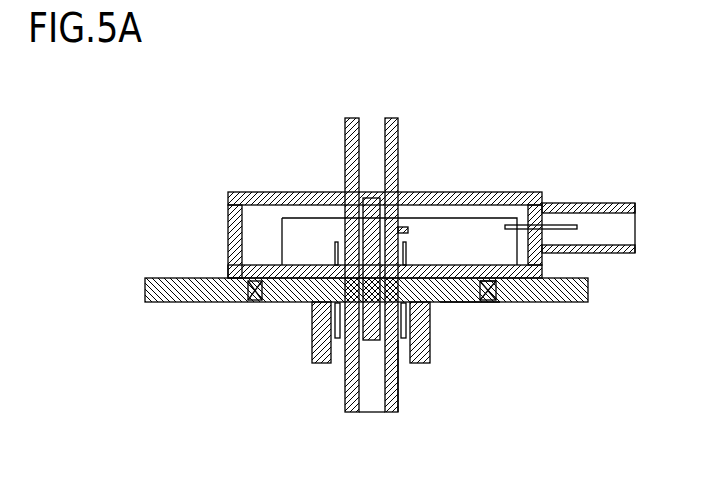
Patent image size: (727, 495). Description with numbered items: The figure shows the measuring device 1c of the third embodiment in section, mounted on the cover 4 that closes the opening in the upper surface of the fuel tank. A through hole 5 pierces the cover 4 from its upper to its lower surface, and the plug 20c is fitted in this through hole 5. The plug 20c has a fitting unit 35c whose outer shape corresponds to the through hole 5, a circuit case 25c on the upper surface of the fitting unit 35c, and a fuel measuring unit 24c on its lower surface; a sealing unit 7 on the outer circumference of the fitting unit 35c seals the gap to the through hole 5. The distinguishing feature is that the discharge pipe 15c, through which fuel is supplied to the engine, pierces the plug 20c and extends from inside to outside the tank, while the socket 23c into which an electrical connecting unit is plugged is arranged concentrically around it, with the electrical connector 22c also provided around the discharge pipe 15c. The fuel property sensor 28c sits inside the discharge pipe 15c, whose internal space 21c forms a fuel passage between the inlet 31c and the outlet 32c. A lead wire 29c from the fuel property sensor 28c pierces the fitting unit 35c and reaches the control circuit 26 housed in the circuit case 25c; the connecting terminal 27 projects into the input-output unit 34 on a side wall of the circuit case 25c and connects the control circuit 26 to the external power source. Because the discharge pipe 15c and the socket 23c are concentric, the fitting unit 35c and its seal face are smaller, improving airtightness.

The measuring device 1c is at (192, 158).
The cover 4 is at (146, 289).
The through hole 5 is at (495, 297).
The sealing unit 7 is at (202, 277).
The discharge pipe 15c is at (345, 162).
The plug 20c is at (473, 306).
The internal space 21c is at (372, 363).
The electrical connector 22c is at (337, 318).
The socket 23c is at (428, 365).
The fuel measuring unit 24c is at (400, 401).
The circuit case 25c is at (539, 192).
The control circuit 26 is at (437, 237).
The connecting terminal 27 is at (572, 226).
The fuel property sensor 28c is at (343, 362).
The lead wire 29c is at (408, 232).
The inlet 31c is at (372, 402).
The outlet 32c is at (370, 128).
The input-output unit 34 is at (608, 203).
The fitting unit 35c is at (272, 262).